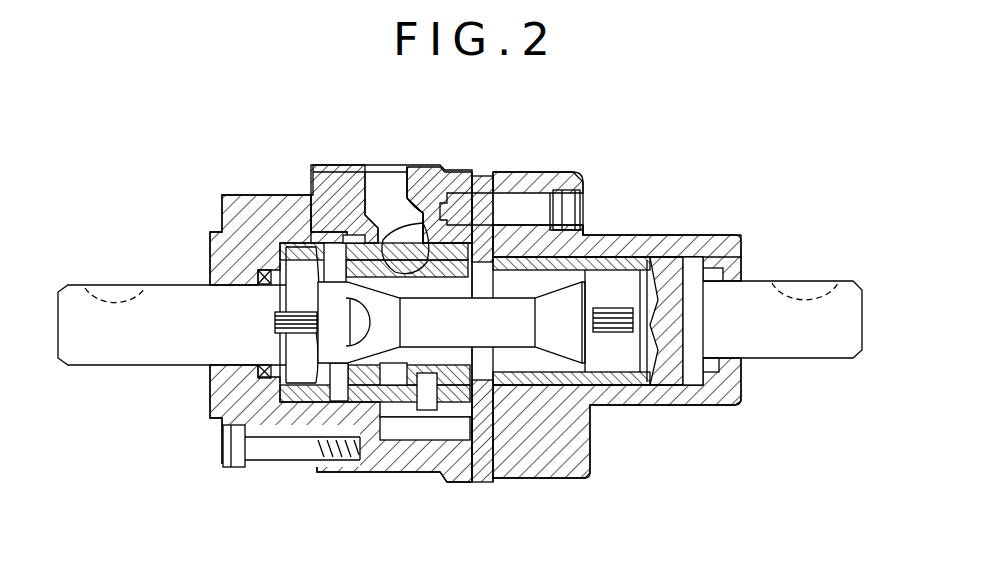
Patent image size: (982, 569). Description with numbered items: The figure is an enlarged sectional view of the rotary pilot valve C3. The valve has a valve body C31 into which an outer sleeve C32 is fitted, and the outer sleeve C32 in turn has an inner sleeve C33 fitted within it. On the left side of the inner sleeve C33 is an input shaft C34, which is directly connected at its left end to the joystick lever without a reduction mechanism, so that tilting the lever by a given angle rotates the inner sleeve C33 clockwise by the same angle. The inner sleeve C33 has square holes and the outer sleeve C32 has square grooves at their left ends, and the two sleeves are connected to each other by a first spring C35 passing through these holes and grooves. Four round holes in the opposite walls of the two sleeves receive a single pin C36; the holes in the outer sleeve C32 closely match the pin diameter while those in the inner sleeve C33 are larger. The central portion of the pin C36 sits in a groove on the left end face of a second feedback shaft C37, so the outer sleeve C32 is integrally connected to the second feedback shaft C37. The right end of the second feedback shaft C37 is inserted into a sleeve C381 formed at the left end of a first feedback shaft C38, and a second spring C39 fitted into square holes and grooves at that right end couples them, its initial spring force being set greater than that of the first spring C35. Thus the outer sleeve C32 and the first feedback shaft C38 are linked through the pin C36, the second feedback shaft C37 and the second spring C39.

The rotary pilot valve C3 is at (603, 156).
The valve body C31 is at (313, 175).
The outer sleeve C32 is at (380, 247).
The inner sleeve C33 is at (425, 262).
The input shaft C34 is at (98, 367).
The first spring C35 is at (276, 318).
The pin C36 is at (338, 392).
The second feedback shaft C37 is at (457, 338).
The first feedback shaft C38 is at (805, 360).
The sleeve C381 is at (668, 262).
The second spring C39 is at (614, 332).